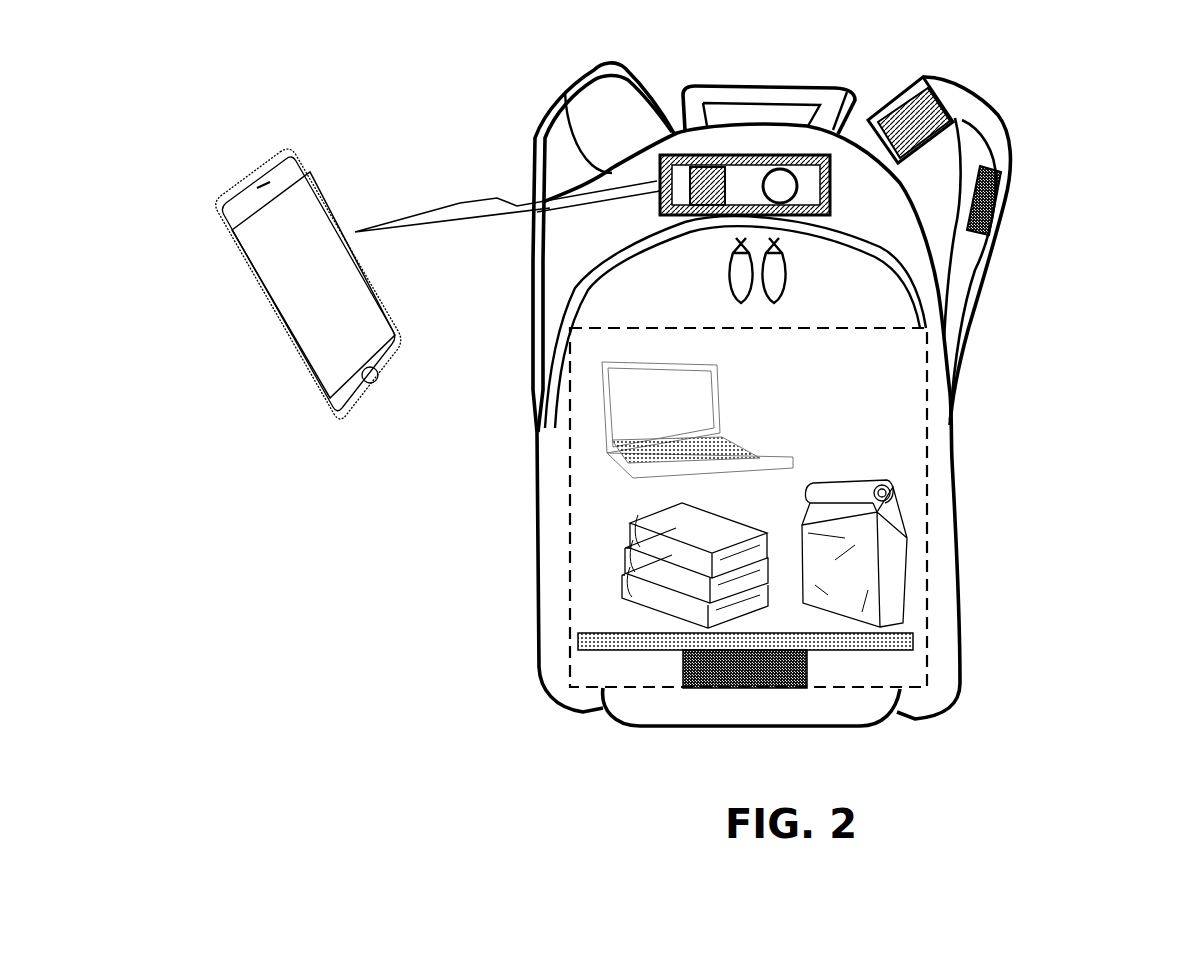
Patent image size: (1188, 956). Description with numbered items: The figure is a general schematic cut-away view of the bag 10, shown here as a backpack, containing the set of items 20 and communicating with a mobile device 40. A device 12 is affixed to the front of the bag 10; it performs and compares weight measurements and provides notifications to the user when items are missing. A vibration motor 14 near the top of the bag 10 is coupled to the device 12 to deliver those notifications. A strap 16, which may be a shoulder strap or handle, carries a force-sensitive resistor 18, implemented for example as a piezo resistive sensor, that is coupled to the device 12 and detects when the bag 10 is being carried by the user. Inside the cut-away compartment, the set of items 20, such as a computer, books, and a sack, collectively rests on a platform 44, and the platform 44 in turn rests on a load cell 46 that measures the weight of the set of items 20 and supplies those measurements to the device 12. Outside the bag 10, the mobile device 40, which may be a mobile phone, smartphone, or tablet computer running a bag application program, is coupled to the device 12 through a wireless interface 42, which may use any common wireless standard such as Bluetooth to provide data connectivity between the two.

The bag 10 is at (536, 392).
The device 12 is at (660, 168).
The vibration motor 14 is at (943, 85).
The strap 16 is at (1011, 140).
The force-sensitive resistor 18 is at (1003, 182).
The set of items 20 is at (850, 323).
The mobile device 40 is at (290, 143).
The wireless interface 42 is at (497, 197).
The platform 44 is at (913, 638).
The load cell 46 is at (807, 664).